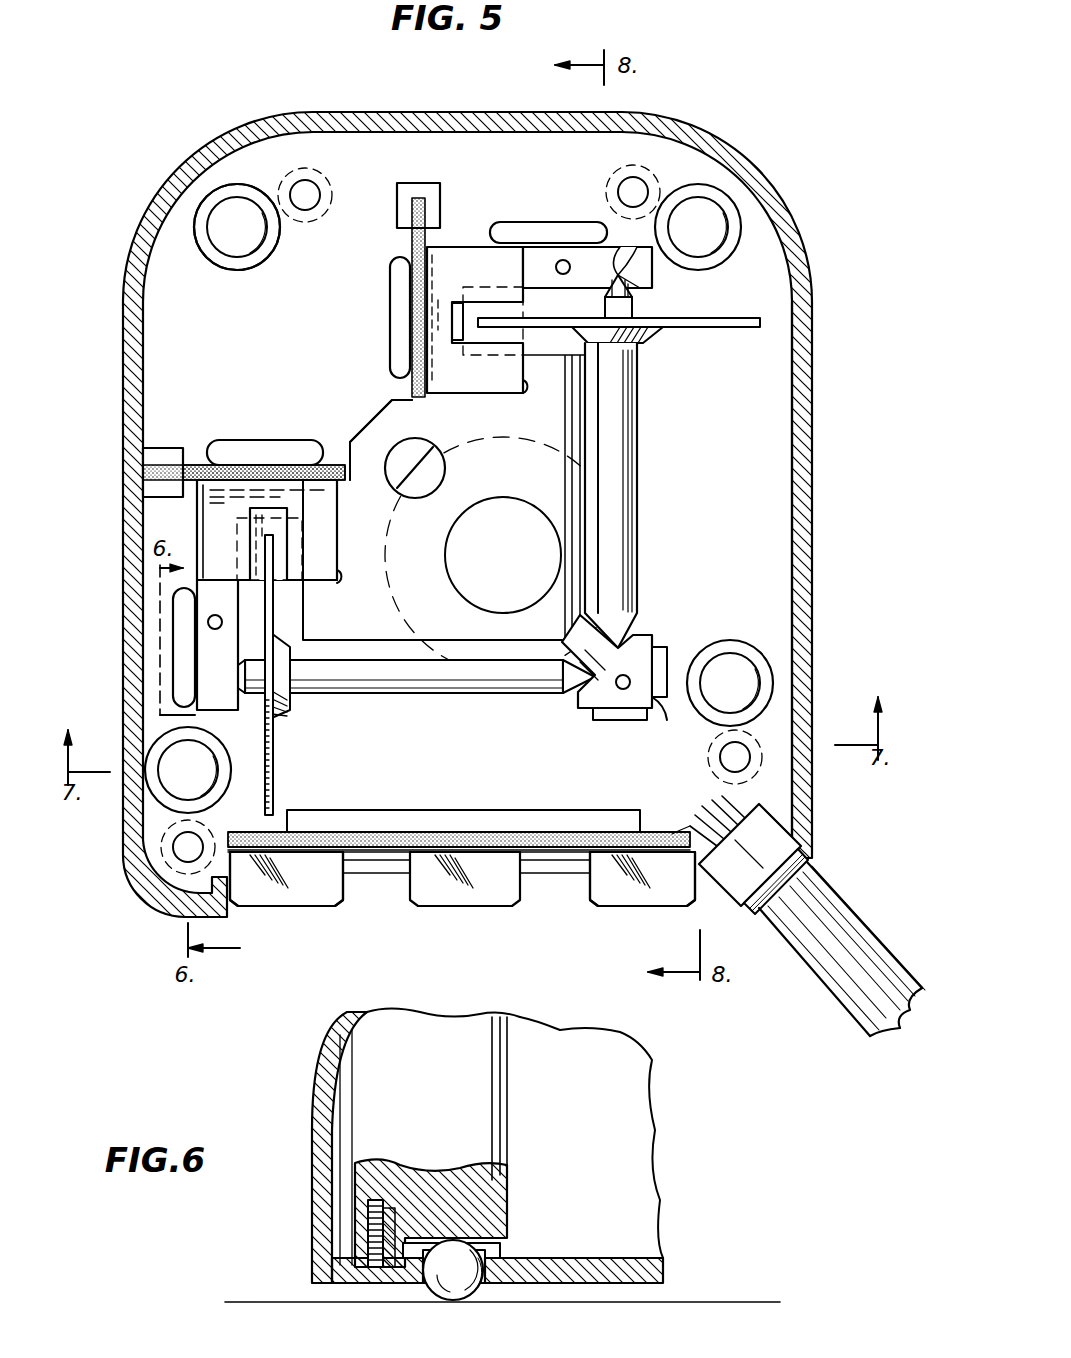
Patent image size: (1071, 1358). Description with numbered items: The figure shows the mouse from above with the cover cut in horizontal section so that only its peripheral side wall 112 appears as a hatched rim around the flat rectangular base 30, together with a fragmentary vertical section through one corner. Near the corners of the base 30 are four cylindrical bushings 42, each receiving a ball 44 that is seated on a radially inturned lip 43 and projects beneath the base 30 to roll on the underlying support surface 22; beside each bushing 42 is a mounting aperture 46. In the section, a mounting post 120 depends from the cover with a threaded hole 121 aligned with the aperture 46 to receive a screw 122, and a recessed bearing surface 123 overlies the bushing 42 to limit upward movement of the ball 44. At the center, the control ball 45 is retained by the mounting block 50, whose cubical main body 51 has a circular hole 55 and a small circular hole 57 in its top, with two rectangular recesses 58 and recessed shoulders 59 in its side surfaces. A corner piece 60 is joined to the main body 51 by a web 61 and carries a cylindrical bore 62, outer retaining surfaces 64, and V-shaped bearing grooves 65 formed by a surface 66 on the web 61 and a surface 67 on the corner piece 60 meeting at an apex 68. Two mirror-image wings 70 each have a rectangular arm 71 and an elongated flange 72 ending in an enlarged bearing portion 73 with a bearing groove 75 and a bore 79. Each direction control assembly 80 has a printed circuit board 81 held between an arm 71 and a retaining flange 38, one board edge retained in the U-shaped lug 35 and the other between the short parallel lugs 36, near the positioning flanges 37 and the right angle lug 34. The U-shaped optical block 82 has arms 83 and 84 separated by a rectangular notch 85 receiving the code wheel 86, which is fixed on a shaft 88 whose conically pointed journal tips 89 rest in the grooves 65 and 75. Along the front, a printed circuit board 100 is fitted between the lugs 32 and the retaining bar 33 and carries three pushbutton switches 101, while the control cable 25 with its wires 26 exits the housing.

In FIG. 6, the support surface 22 is at (262, 1300).
In FIG. 5, the control cable 25 is at (868, 1003).
In FIG. 5, the wires 26 is at (700, 806).
In FIG. 5, the base 30 is at (775, 498).
In FIG. 6, the base 30 is at (645, 1258).
In FIG. 5, the upstanding lugs 32 is at (385, 862).
In FIG. 5, the retaining bar 33 is at (470, 812).
In FIG. 5, the right angle lug 34 is at (622, 722).
In FIG. 5, the U-shaped lug 35 is at (420, 190).
In FIG. 5, the short parallel lugs 36 is at (150, 462).
In FIG. 5, the positioning flanges 37 is at (545, 235).
In FIG. 5, the retaining flanges 38 is at (385, 372).
In FIG. 5, the cylindrical bushings 42 is at (228, 252).
In FIG. 6, the cylindrical bushings 42 is at (505, 1250).
In FIG. 6, the inturned lip 43 is at (435, 1277).
In FIG. 5, the ball 44 is at (237, 225).
In FIG. 6, the ball 44 is at (468, 1292).
In FIG. 5, the control ball 45 is at (425, 462).
In FIG. 5, the mounting apertures 46 is at (303, 185).
In FIG. 6, the mounting apertures 46 is at (365, 1278).
In FIG. 5, the mounting block 50 is at (590, 512).
In FIG. 5, the main body 51 is at (572, 482).
In FIG. 5, the circular hole 55 is at (512, 512).
In FIG. 5, the small circular hole 57 is at (445, 472).
In FIG. 5, the rectangular recesses 58 is at (523, 390).
In FIG. 5, the recessed shoulders 59 is at (415, 402).
In FIG. 5, the corner piece 60 is at (645, 660).
In FIG. 5, the web 61 is at (625, 612).
In FIG. 5, the cylindrical bore 62 is at (622, 690).
In FIG. 5, the outer retaining surfaces 64 is at (655, 700).
In FIG. 5, the bearing grooves 65 is at (567, 650).
In FIG. 5, the surface 66 is at (567, 690).
In FIG. 5, the surface 67 is at (573, 703).
In FIG. 5, the apex 68 is at (617, 262).
In FIG. 5, the wings 70 is at (660, 272).
In FIG. 5, the rectangular arm 71 is at (456, 325).
In FIG. 5, the elongated flange 72 is at (457, 247).
In FIG. 5, the bearing portion 73 is at (585, 258).
In FIG. 5, the bearing grooves 75 is at (640, 292).
In FIG. 5, the cylindrical bore 79 is at (563, 260).
In FIG. 5, the direction control assemblies 80 is at (742, 372).
In FIG. 5, the printed circuit board 81 is at (412, 245).
In FIG. 5, the optical block 82 is at (268, 470).
In FIG. 5, the arm 83 is at (335, 532).
In FIG. 5, the arm 84 is at (212, 518).
In FIG. 5, the rectangular notch 85 is at (276, 592).
In FIG. 5, the code wheel 86 is at (273, 772).
In FIG. 5, the shaft 88 is at (632, 414).
In FIG. 5, the journal tips 89 is at (610, 283).
In FIG. 5, the printed circuit board 100 is at (575, 815).
In FIG. 5, the pushbutton switches 101 is at (470, 877).
In FIG. 5, the peripheral side wall 112 is at (803, 445).
In FIG. 6, the peripheral side wall 112 is at (318, 1098).
In FIG. 6, the mounting posts 120 is at (500, 1040).
In FIG. 6, the threaded hole 121 is at (368, 1228).
In FIG. 6, the screws 122 is at (380, 1252).
In FIG. 6, the recessed bearing surface 123 is at (500, 1242).